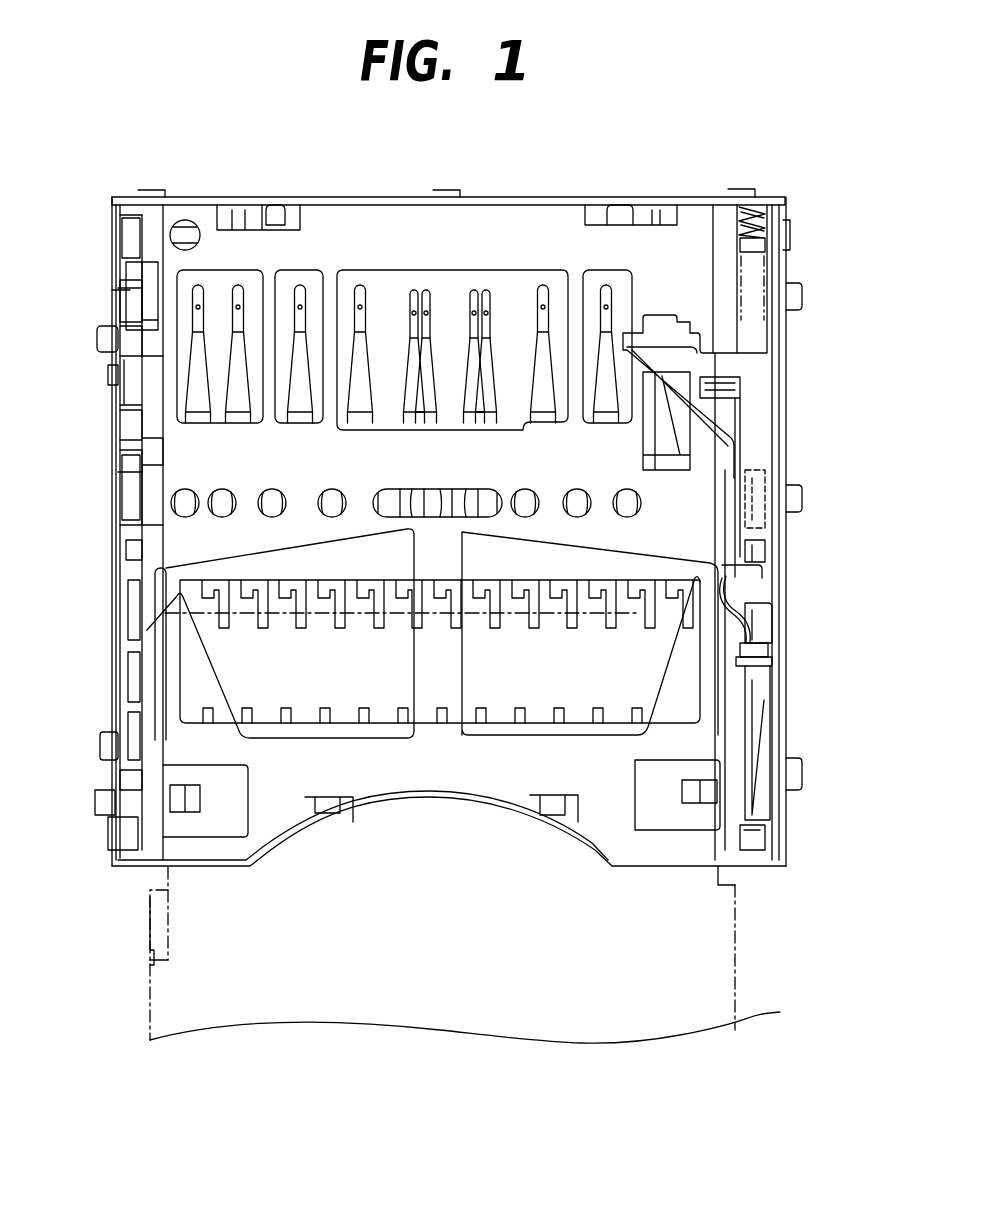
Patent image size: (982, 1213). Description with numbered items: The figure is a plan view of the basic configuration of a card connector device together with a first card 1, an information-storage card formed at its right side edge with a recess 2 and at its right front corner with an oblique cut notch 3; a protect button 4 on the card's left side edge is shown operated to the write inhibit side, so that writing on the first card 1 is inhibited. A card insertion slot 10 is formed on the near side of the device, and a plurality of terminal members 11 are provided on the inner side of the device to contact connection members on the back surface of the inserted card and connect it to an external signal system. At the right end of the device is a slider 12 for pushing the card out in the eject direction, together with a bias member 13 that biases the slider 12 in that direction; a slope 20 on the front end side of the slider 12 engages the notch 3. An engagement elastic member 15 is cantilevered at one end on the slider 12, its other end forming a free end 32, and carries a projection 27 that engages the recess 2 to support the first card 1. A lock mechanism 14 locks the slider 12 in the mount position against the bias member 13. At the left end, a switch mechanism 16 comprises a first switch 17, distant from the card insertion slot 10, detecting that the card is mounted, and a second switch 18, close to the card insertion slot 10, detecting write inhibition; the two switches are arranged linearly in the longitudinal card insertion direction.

The first card 1 is at (735, 975).
The recess 2 is at (730, 870).
The notch 3 is at (648, 668).
The protect button 4 is at (153, 923).
The card insertion slot 10 is at (663, 850).
The terminal members 11 is at (360, 295).
The slider 12 is at (760, 381).
The bias member 13 is at (762, 205).
The lock mechanism 14 is at (757, 757).
The engagement elastic member 15 is at (737, 598).
The switch mechanism 16 is at (60, 288).
The first switch 17 is at (130, 291).
The second switch 18 is at (130, 492).
The slope 20 is at (732, 445).
The projection 27 is at (737, 590).
The free end 32 is at (767, 658).